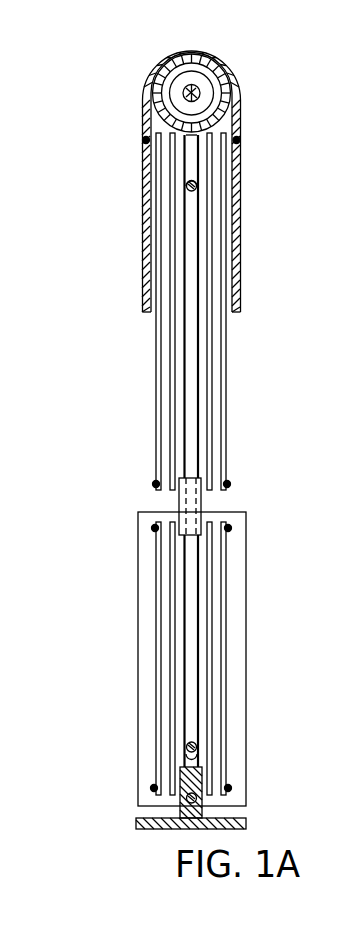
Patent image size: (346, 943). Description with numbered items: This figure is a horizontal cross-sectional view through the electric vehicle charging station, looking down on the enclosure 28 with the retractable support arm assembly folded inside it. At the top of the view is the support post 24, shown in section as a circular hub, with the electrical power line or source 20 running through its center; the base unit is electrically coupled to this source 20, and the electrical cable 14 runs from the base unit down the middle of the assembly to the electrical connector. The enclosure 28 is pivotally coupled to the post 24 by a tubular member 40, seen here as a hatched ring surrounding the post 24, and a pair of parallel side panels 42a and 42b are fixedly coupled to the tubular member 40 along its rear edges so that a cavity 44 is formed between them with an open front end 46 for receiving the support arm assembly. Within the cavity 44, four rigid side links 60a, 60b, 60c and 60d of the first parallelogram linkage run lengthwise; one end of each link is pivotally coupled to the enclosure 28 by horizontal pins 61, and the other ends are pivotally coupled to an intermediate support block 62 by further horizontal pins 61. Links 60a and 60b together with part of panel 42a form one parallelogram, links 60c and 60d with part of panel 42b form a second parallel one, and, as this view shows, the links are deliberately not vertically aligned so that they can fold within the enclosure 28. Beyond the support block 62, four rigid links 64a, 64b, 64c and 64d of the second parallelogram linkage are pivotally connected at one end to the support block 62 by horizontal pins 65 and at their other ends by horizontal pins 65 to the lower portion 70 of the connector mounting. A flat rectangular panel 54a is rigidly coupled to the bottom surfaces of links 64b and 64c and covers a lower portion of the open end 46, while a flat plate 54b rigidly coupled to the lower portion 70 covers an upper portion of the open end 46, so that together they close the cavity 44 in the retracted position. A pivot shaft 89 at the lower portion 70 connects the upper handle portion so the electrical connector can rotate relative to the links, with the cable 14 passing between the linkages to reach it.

The electrical cable 14 is at (199, 358).
The electrical power line or source 20 is at (198, 91).
The support post 24 is at (172, 78).
The enclosure 28 is at (190, 203).
The tubular member 40 is at (172, 62).
The side panel 42a is at (143, 215).
The side panel 42b is at (240, 215).
The cavity 44 is at (187, 158).
The open front end 46 is at (156, 320).
The panel 54a is at (247, 695).
The panel 54b is at (138, 823).
The rigid side link 60a is at (156, 400).
The rigid side link 60b is at (170, 432).
The rigid side link 60c is at (212, 403).
The rigid side link 60d is at (226, 432).
The horizontal pin 61 is at (143, 140).
The intermediate support block 62 is at (179, 500).
The rigid link 64a is at (156, 575).
The rigid link 64b is at (170, 612).
The rigid link 64c is at (212, 590).
The rigid link 64d is at (226, 628).
The horizontal pin 65 is at (152, 528).
The lower portion 70 is at (180, 810).
The pivot shaft 89 is at (202, 810).